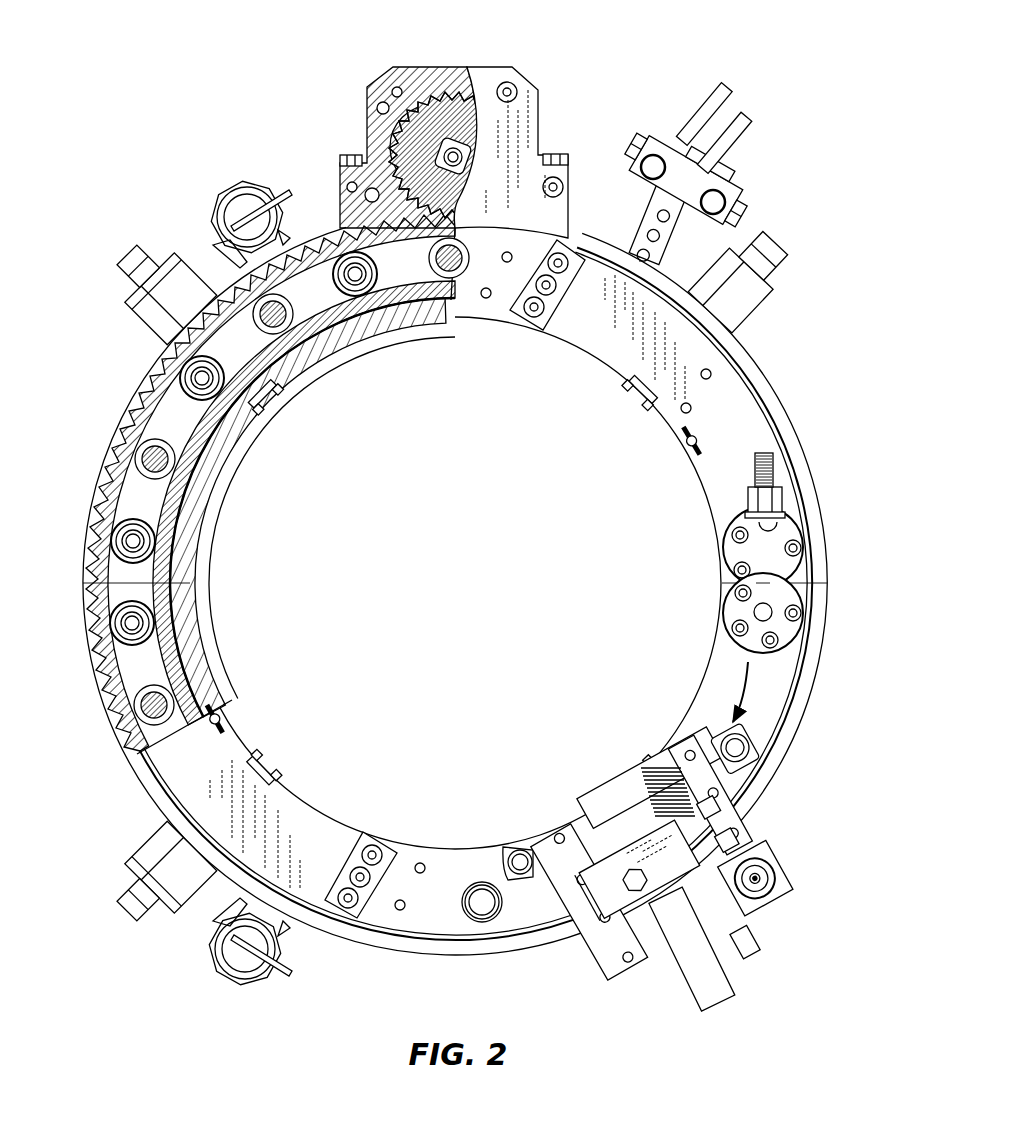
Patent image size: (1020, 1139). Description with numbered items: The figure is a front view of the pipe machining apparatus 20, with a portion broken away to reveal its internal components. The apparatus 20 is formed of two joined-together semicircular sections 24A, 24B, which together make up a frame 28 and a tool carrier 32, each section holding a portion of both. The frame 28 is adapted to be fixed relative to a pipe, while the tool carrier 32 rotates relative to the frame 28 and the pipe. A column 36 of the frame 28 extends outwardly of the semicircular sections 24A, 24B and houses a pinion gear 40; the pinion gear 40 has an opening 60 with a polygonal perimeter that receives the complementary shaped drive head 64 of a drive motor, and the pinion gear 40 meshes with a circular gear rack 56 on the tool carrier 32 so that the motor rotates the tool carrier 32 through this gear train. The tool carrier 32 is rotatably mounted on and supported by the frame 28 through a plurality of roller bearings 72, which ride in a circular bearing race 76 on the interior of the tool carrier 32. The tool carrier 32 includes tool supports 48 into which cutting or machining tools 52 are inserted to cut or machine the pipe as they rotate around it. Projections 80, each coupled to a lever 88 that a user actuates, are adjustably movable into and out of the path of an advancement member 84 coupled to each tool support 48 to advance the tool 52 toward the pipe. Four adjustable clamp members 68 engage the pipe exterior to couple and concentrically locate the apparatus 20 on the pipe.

The pipe machining apparatus 20 is at (842, 179).
The semicircular section 24A is at (775, 366).
The semicircular section 24B is at (808, 744).
The frame 28 is at (90, 522).
The tool carrier 32 is at (740, 432).
The column 36 is at (531, 66).
The pinion gear 40 is at (418, 160).
The tool support 48 is at (651, 987).
The cutting or machining tool 52 is at (598, 798).
The circular gear rack 56 is at (150, 372).
The opening 60 is at (395, 135).
The drive head 64 is at (440, 160).
The clamp member 68 is at (808, 272).
The roller bearing 72 is at (208, 350).
The circular bearing race 76 is at (205, 572).
The projection 80 is at (653, 163).
The advancement member 84 is at (792, 860).
The lever 88 is at (746, 102).